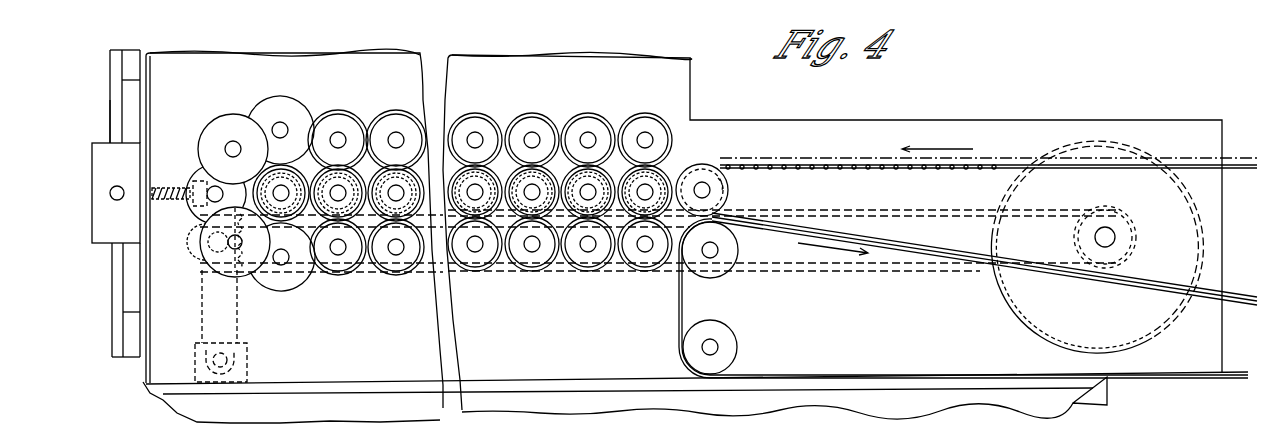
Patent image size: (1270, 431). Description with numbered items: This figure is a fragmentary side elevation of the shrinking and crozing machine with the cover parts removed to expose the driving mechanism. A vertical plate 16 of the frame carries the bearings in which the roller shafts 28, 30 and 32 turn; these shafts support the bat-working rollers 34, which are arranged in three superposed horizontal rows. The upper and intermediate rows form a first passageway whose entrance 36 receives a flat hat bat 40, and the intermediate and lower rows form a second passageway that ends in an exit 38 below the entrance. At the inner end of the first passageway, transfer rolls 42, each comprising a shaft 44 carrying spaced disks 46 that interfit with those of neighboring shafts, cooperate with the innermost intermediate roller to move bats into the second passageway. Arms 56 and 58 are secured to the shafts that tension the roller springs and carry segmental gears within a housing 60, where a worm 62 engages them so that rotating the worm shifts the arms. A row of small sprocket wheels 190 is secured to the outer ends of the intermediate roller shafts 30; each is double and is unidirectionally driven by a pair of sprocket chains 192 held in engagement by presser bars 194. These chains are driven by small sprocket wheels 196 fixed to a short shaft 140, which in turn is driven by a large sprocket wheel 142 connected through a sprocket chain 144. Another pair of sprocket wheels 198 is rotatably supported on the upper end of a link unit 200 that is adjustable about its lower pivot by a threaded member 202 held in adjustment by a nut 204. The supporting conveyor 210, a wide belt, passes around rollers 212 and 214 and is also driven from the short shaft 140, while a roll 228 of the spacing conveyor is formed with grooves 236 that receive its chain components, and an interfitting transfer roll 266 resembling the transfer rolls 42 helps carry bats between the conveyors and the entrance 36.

The vertical plate 16 is at (470, 58).
The roller shaft 28 is at (396, 132).
The roller shaft 30 is at (278, 190).
The roller shaft 32 is at (395, 255).
The bat-working roller 34 is at (455, 146).
The entrance 36 is at (668, 165).
The exit 38 is at (656, 268).
The hat bat 40 is at (788, 157).
The transfer roll 42 is at (295, 97).
The shaft 44 is at (280, 122).
The disk 46 is at (254, 114).
The arm 56 is at (114, 74).
The arm 58 is at (113, 280).
The housing 60 is at (98, 140).
The worm 62 is at (117, 186).
The short shaft 140 is at (1105, 227).
The large sprocket wheel 142 is at (1035, 315).
The sprocket chain 144 is at (1130, 340).
The small sprocket wheel 190 is at (300, 178).
The sprocket chain 192 is at (308, 283).
The presser bar 194 is at (530, 227).
The small sprocket wheel 196 is at (1073, 235).
The sprocket wheel 198 is at (200, 258).
The link unit 200 is at (207, 299).
The threaded member 202 is at (165, 180).
The nut 204 is at (195, 205).
The supporting conveyor 210 is at (687, 312).
The roller 212 is at (730, 251).
The roller 214 is at (732, 340).
The roll 228 is at (733, 193).
The groove 236 is at (728, 180).
The transfer roll 266 is at (832, 164).